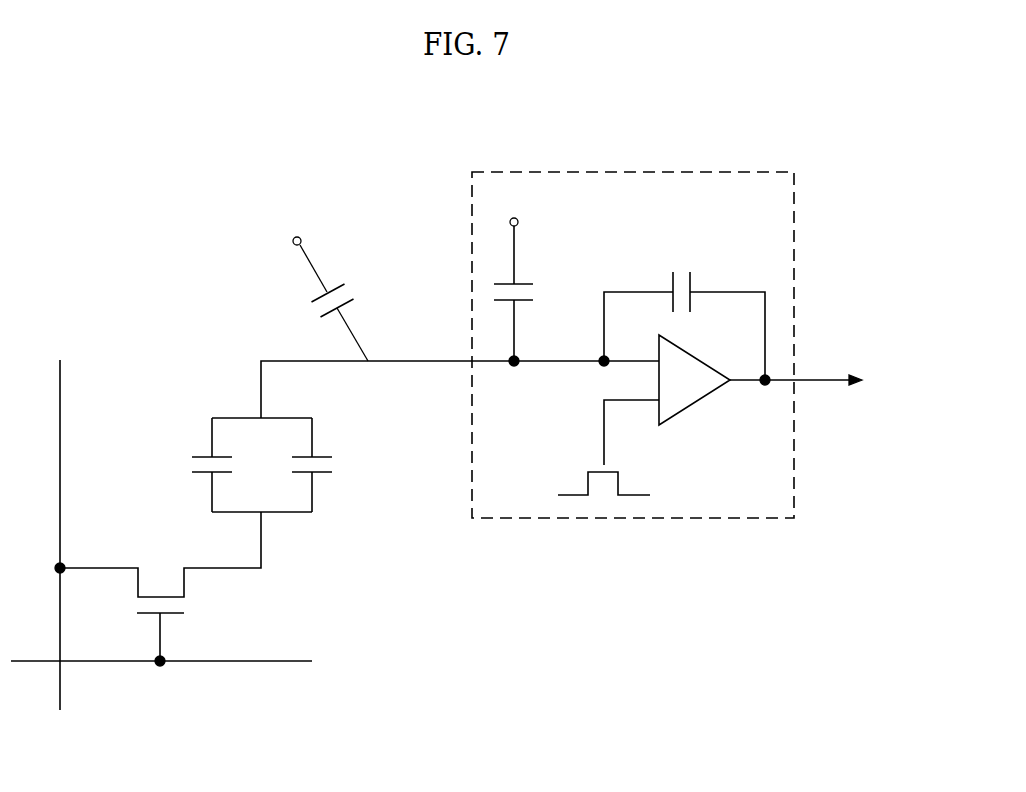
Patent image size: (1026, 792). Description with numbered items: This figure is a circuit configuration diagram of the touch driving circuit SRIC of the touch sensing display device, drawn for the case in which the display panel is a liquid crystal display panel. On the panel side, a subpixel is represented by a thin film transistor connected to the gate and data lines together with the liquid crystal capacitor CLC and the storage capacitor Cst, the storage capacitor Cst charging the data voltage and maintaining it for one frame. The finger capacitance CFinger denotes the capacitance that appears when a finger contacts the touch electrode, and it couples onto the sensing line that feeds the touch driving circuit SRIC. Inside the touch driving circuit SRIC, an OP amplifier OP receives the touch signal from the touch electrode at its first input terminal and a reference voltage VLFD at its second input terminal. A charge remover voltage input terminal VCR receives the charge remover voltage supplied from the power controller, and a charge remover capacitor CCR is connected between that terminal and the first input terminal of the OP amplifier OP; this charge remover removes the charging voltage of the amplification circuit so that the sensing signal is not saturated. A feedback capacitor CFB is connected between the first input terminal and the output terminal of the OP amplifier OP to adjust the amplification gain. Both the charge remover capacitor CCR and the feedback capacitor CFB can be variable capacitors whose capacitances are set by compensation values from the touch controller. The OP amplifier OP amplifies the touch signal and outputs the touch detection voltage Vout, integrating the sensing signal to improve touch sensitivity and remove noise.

The liquid crystal capacitor CLC is at (233, 465).
The storage capacitor Cst is at (335, 465).
The finger capacitance CFinger is at (317, 283).
The touch driving circuit SRIC is at (505, 520).
The charge remover voltage input terminal VCR is at (516, 234).
The charge remover capacitor CCR is at (536, 320).
The feedback capacitor CFB is at (684, 310).
The OP amplifier OP is at (694, 380).
The touch detection voltage Vout is at (829, 381).
The reference voltage VLFD is at (662, 485).